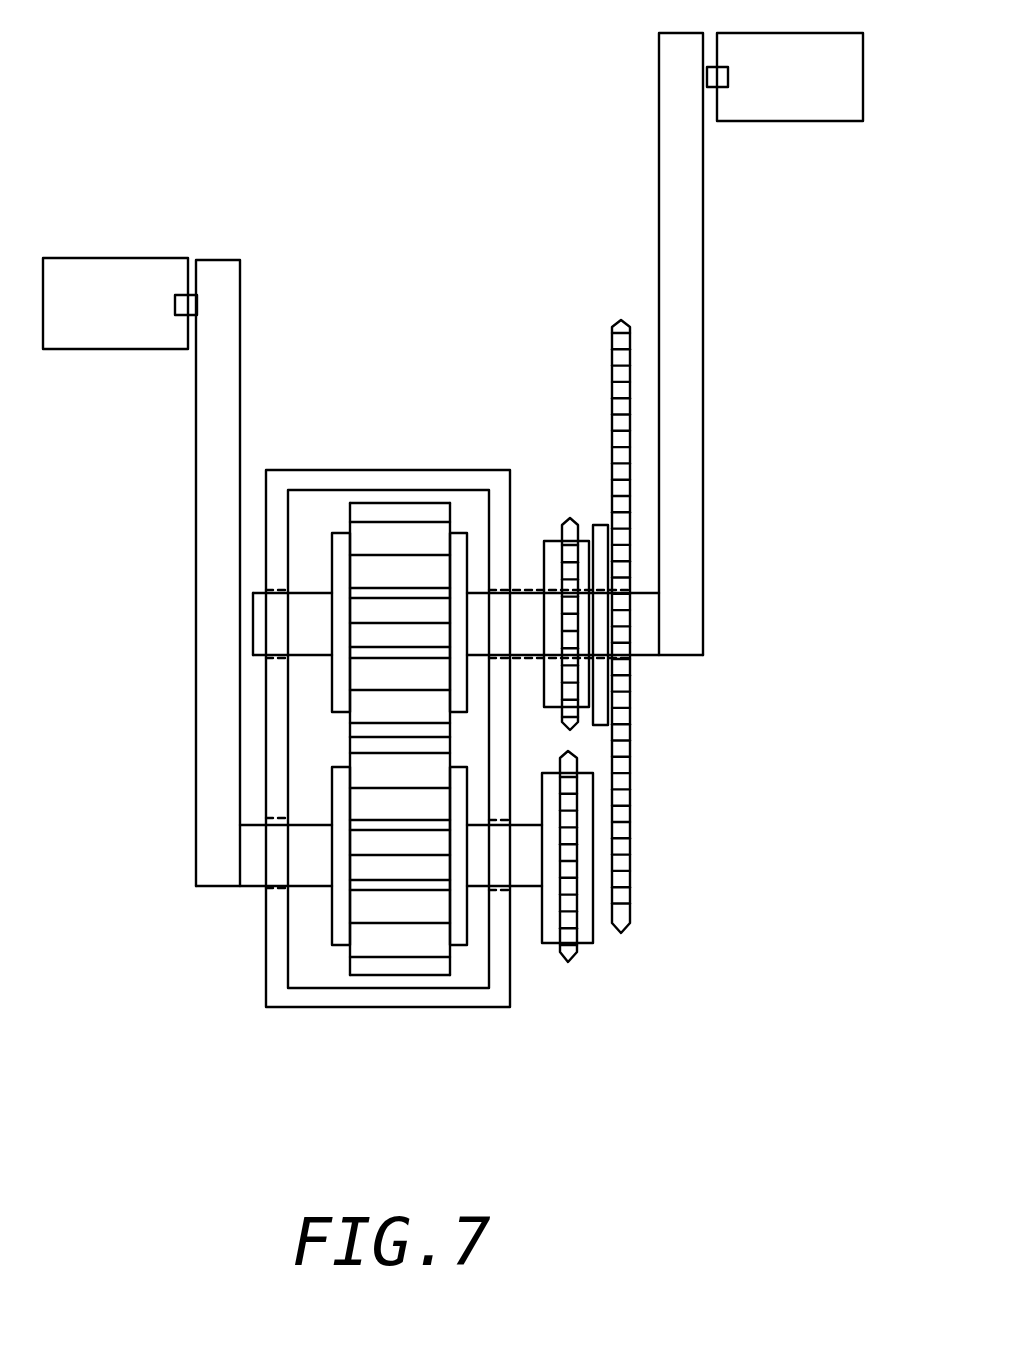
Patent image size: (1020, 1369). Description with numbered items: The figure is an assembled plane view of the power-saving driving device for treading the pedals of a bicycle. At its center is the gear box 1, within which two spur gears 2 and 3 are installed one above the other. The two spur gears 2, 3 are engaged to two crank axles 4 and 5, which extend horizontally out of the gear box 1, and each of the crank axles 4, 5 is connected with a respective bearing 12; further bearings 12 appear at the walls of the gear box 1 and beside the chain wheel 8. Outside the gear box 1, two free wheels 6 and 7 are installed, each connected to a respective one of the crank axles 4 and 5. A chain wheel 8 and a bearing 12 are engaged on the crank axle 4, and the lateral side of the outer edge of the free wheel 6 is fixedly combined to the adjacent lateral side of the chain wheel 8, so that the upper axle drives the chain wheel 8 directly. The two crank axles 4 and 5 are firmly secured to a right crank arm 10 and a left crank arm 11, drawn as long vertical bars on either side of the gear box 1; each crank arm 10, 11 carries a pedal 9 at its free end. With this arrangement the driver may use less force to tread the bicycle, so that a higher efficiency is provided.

The gear housing 1 is at (503, 485).
The spur gear 2 is at (392, 522).
The spur gear 3 is at (405, 953).
The crank axle 4 is at (305, 630).
The crank axle 5 is at (315, 870).
The free wheel 6 is at (571, 522).
The free wheel 7 is at (568, 965).
The chain wheel 8 is at (621, 322).
The motor 9 is at (115, 333).
The right crank arm 10 is at (675, 533).
The left crank arm 11 is at (213, 543).
The bearing 12 is at (278, 590).